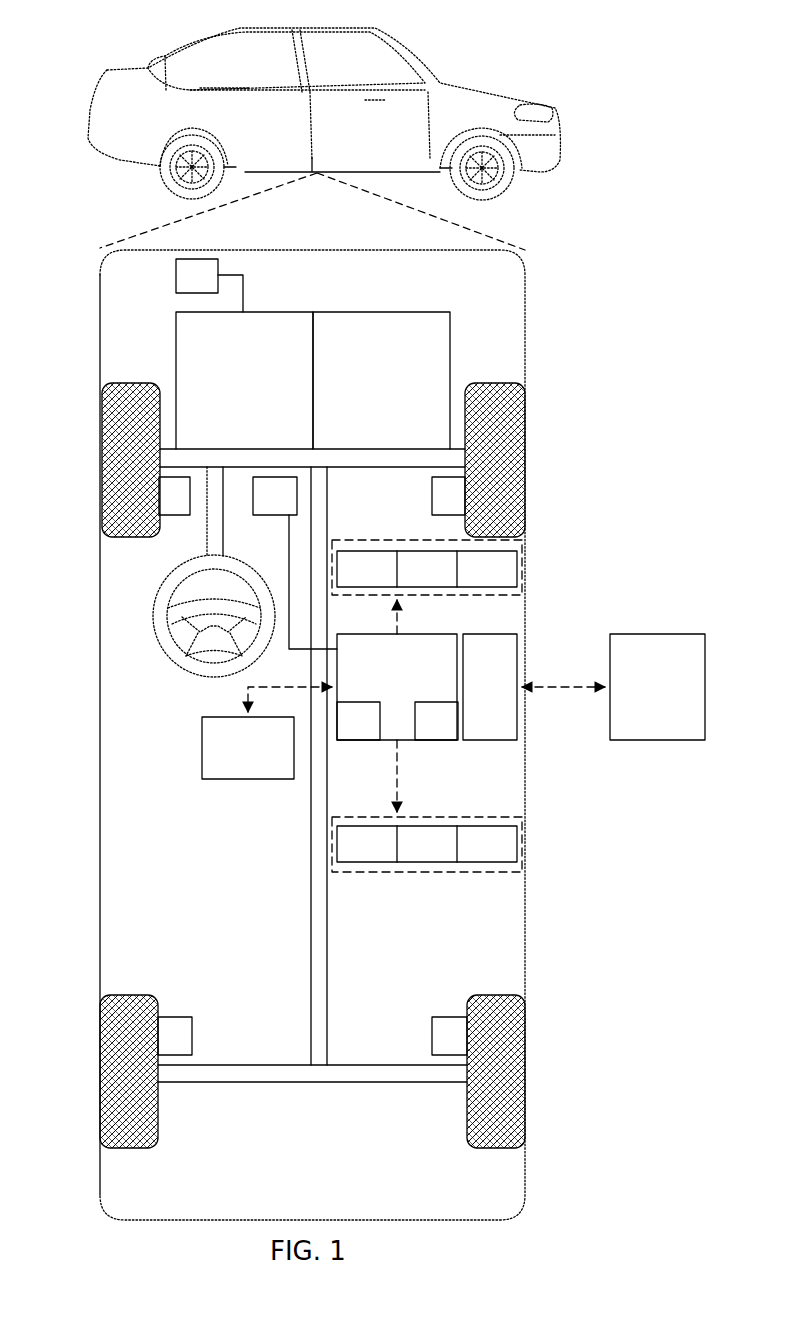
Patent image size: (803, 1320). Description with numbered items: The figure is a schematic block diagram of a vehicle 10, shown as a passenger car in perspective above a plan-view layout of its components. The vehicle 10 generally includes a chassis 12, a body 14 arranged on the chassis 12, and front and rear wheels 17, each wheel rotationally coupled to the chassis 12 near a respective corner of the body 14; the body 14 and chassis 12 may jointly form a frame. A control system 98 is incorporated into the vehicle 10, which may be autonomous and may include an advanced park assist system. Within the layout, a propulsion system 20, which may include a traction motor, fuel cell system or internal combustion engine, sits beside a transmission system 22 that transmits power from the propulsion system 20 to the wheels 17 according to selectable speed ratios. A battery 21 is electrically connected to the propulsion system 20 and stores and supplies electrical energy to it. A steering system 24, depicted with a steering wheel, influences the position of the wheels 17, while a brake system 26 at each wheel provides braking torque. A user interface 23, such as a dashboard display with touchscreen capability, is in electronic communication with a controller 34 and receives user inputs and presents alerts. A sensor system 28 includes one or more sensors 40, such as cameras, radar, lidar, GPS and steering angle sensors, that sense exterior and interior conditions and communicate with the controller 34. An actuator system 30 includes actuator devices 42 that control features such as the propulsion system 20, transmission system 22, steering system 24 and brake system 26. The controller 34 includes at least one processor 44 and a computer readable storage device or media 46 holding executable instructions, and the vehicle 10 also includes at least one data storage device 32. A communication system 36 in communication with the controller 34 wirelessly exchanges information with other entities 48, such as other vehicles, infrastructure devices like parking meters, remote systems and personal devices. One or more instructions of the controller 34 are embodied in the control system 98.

The vehicle 10 is at (96, 100).
The chassis 12 is at (310, 936).
The body 14 is at (100, 805).
The front and rear wheels 17 is at (128, 380).
The propulsion system 20 is at (260, 395).
The battery 21 is at (178, 258).
The transmission system 22 is at (397, 395).
The user interface 23 is at (290, 510).
The steering system 24 is at (232, 534).
The brake system 26 is at (188, 510).
The sensor system 28 is at (408, 538).
The actuator system 30 is at (456, 873).
The data storage device 32 is at (263, 760).
The controller 34 is at (412, 682).
The communication system 36 is at (505, 702).
The sensors 40 is at (382, 585).
The actuator devices 42 is at (382, 860).
The processor 44 is at (373, 736).
The computer readable storage device or media 46 is at (451, 736).
The other entities 48 is at (672, 702).
The control system 98 is at (553, 268).